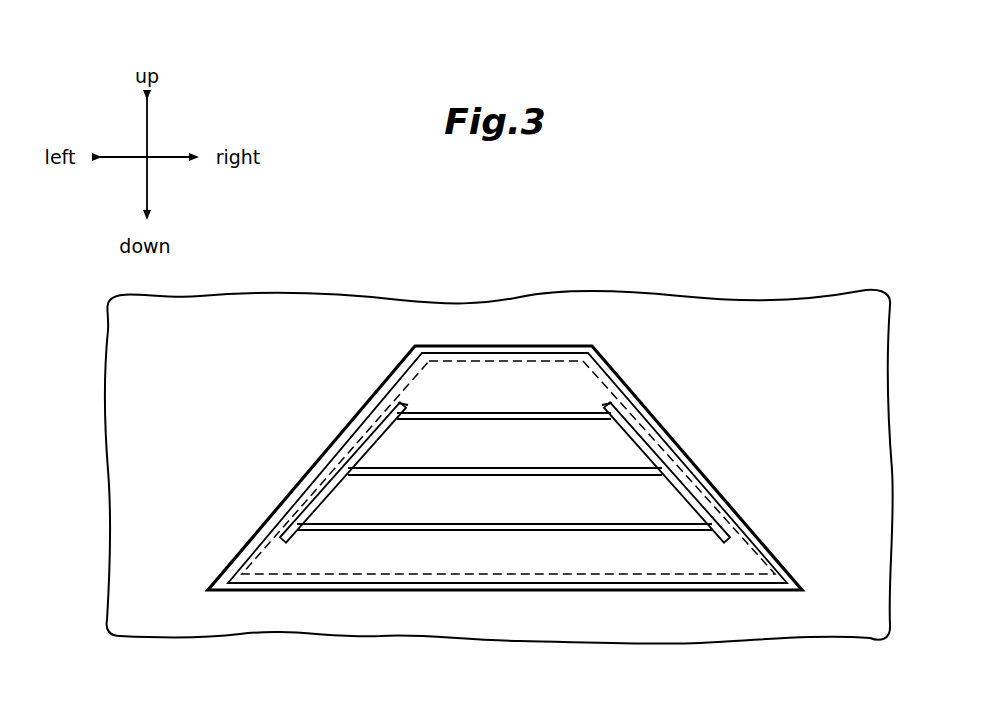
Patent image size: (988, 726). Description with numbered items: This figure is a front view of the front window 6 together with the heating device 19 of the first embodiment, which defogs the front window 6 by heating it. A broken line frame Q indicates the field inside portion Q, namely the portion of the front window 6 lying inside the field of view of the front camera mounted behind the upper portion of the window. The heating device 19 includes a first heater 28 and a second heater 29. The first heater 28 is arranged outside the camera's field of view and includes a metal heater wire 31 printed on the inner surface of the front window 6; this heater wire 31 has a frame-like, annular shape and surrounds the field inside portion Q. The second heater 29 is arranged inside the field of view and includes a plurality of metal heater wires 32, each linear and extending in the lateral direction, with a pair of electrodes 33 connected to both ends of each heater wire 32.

The front window 6 is at (689, 316).
The heating device 19 is at (345, 391).
The first heater 28 is at (670, 405).
The second heater 29 is at (394, 537).
The heater wire 31 is at (727, 500).
The heater wires 32 is at (478, 419).
The electrodes 33 is at (403, 408).
The field inside portion Q is at (565, 361).